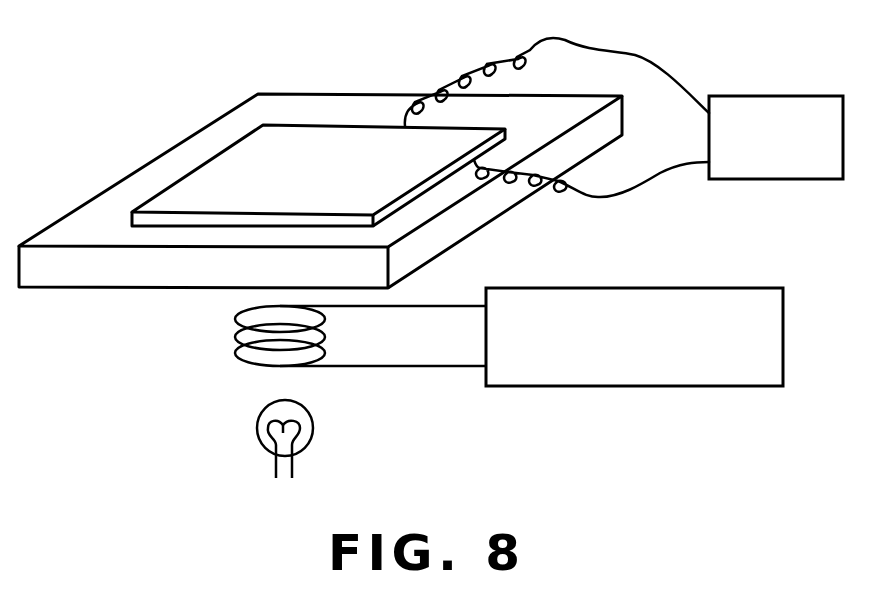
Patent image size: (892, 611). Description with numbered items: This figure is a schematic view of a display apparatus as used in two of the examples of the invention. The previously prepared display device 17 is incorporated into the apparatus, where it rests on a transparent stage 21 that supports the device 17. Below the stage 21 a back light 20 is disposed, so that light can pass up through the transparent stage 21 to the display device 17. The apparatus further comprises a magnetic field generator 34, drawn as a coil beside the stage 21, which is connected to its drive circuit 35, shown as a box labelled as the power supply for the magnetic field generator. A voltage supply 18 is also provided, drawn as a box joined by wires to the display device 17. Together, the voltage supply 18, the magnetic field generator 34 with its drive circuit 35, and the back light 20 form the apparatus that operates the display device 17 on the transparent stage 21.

The display device 17 is at (332, 181).
The voltage supply 18 is at (768, 95).
The back light 20 is at (257, 432).
The transparent stage 21 is at (120, 273).
The magnetic field generator 34 is at (383, 368).
The drive circuit 35 is at (677, 287).